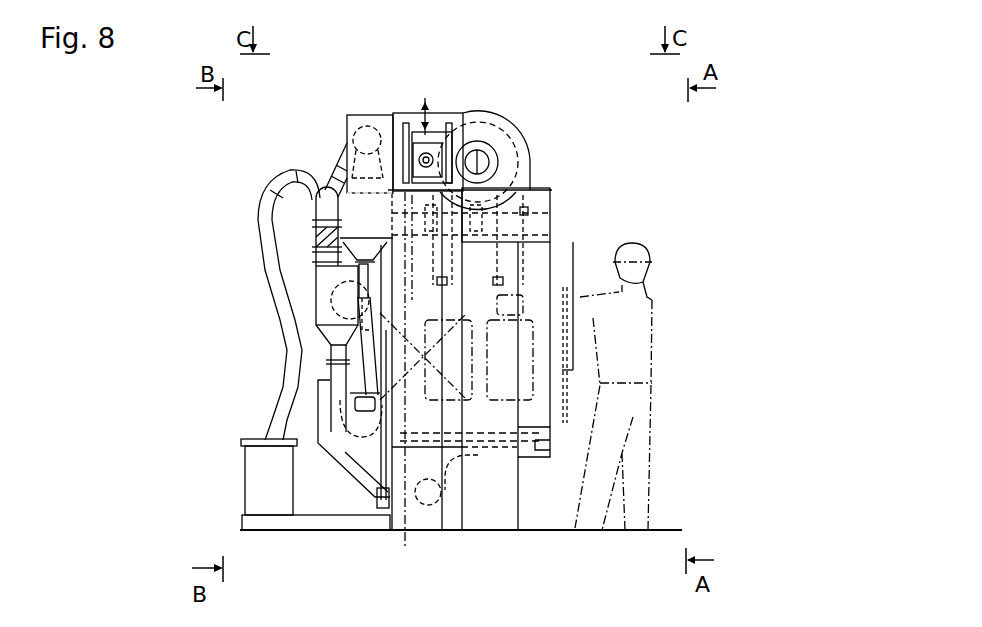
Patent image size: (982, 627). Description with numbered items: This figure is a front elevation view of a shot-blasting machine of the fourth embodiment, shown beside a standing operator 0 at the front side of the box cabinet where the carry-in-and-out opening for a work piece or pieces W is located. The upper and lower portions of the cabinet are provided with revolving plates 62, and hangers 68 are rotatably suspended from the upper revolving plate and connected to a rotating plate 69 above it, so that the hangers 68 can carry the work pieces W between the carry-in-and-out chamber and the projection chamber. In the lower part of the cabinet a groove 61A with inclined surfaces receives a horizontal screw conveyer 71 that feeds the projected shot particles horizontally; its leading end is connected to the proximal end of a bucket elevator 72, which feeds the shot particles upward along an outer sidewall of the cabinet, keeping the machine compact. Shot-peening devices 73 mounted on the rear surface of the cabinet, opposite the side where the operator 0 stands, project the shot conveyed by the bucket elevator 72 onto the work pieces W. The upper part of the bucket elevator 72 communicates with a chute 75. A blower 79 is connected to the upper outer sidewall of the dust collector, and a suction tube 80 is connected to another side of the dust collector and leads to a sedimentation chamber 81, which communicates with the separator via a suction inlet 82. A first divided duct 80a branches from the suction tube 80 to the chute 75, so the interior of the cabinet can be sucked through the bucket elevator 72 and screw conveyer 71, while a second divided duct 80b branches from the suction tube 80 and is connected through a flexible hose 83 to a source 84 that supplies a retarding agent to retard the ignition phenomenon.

The standing operator 0 is at (657, 283).
The groove 61A is at (405, 382).
The revolving plate 62 is at (550, 228).
The hanger 68 is at (437, 283).
The rotating plate 69 is at (527, 211).
The horizontal screw conveyer 71 is at (452, 503).
The bucket elevator 72 is at (413, 104).
The shot-peening device 73 is at (318, 330).
The chute 75 is at (357, 115).
The blower 79 is at (508, 100).
The suction tube 80 is at (303, 209).
The first divided duct 80a is at (333, 147).
The second divided duct 80b is at (294, 157).
The sedimentation chamber 81 is at (318, 288).
The suction inlet 82 is at (360, 297).
The flexible hose 83 is at (268, 413).
The source for supplying a retarding agent 84 is at (233, 457).
The work piece W is at (475, 333).